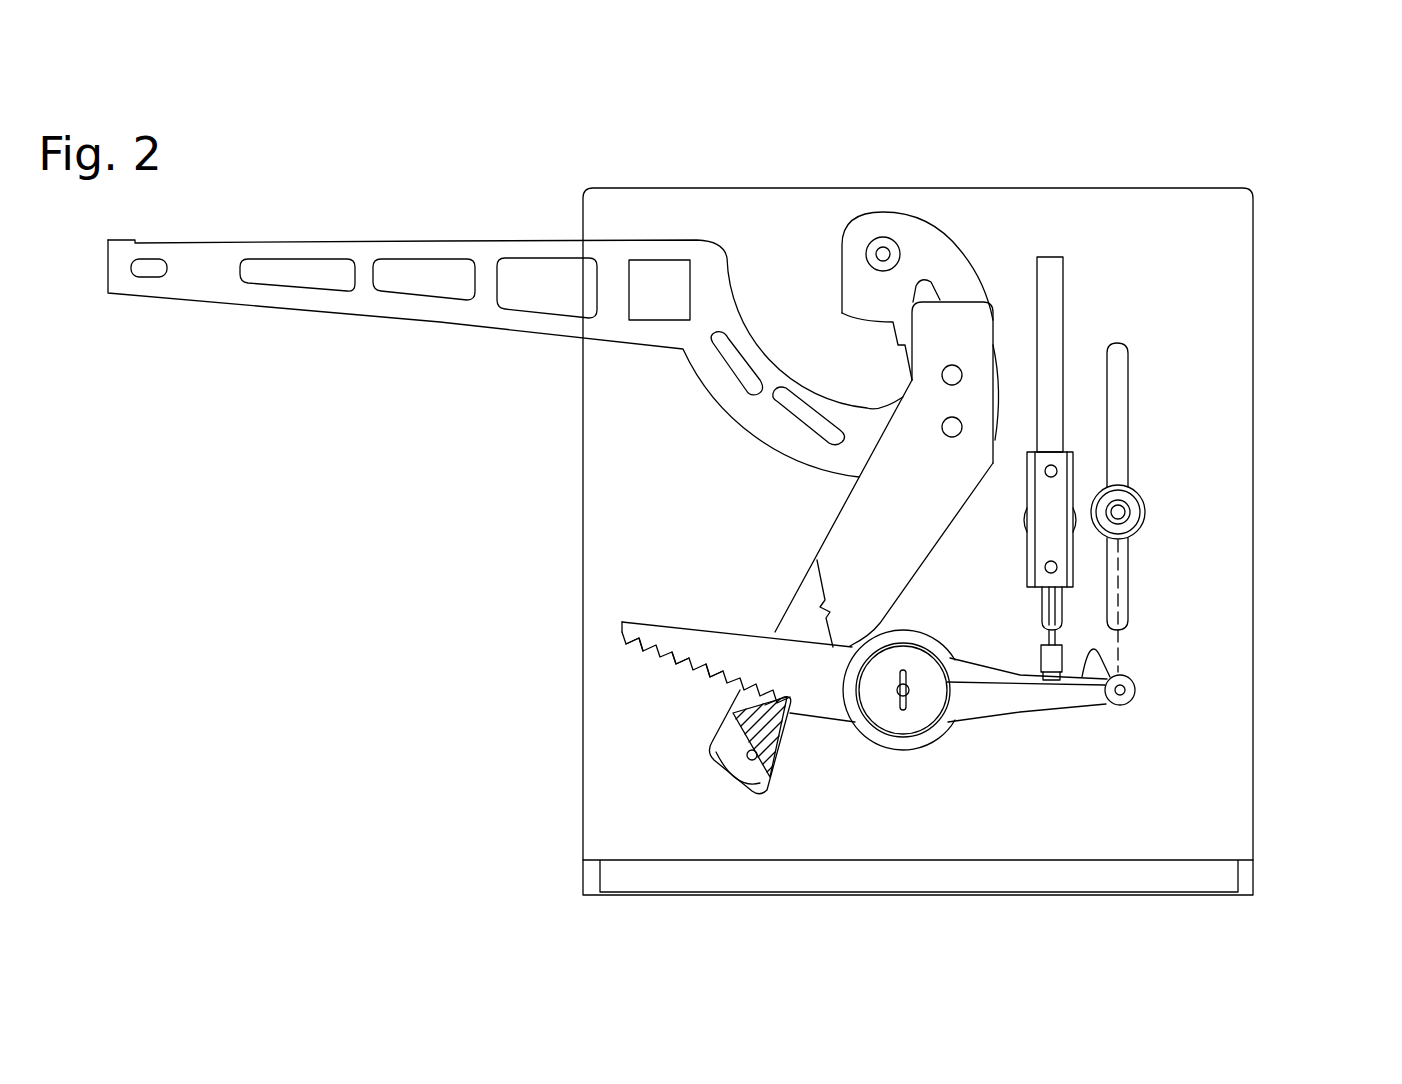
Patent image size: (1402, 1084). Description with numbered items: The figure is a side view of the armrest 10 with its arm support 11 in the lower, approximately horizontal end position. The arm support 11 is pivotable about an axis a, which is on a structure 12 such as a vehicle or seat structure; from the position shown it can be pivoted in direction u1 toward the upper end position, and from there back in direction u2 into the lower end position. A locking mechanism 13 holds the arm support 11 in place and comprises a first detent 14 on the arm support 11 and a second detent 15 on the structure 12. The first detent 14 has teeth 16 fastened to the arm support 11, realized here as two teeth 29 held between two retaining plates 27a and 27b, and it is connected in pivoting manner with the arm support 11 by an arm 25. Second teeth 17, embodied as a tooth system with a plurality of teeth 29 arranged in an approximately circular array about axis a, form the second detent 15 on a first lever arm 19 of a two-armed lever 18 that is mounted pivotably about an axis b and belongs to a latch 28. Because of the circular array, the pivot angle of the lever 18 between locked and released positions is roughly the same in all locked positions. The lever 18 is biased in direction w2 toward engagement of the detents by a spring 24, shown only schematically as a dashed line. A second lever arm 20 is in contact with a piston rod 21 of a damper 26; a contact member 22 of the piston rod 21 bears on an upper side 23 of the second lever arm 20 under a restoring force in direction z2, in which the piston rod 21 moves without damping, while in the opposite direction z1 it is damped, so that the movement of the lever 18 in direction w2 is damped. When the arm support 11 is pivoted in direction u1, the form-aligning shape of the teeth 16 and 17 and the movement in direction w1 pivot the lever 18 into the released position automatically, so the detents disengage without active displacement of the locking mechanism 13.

The armrest 10 is at (1287, 162).
The arm support 11 is at (372, 262).
The structure 12 is at (1175, 487).
The locking mechanism 13 is at (712, 722).
The first detent 14 is at (731, 752).
The second detent 15 is at (636, 668).
The teeth 16 is at (770, 730).
The second teeth 17 is at (690, 695).
The two-armed lever 18 is at (927, 713).
The first lever arm 19 is at (638, 630).
The second lever arm 20 is at (1150, 693).
The piston rod 21 is at (1062, 607).
The contact member 22 is at (1060, 662).
The upper side 23 is at (1110, 678).
The spring 24 is at (1124, 571).
The arm 25 is at (867, 527).
The damper 26 is at (1072, 272).
The retaining plate 27a is at (810, 622).
The retaining plate 27b is at (977, 326).
The latch 28 is at (924, 762).
The teeth 29 is at (714, 672).
The axis a is at (885, 250).
The axis b is at (896, 698).
The direction u1 is at (773, 137).
The direction u2 is at (800, 117).
The direction z1 is at (1201, 246).
The direction z2 is at (1201, 345).
The direction w1 is at (803, 800).
The direction w2 is at (1088, 757).